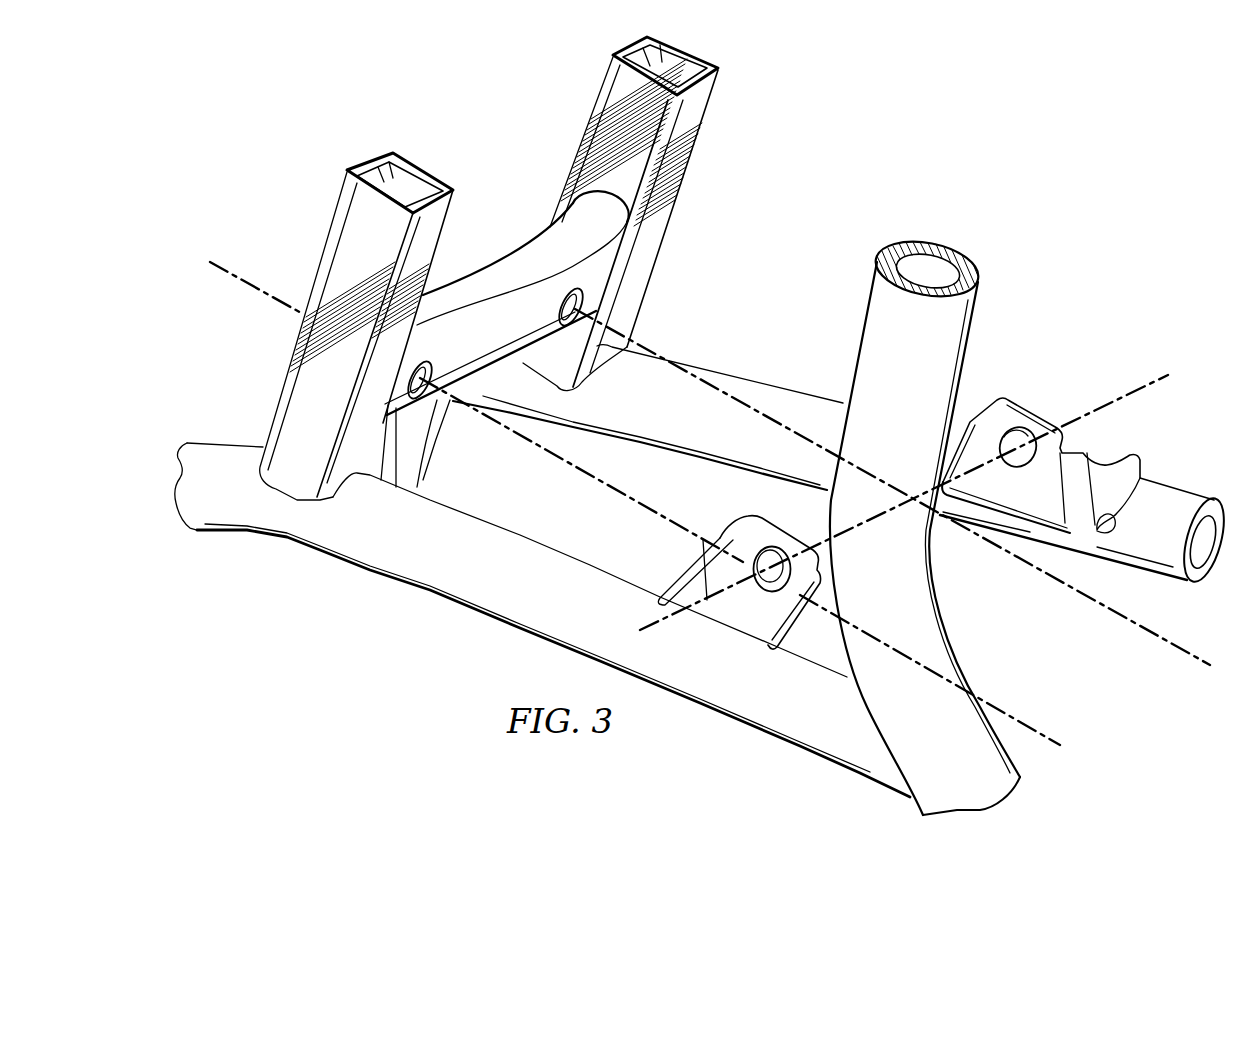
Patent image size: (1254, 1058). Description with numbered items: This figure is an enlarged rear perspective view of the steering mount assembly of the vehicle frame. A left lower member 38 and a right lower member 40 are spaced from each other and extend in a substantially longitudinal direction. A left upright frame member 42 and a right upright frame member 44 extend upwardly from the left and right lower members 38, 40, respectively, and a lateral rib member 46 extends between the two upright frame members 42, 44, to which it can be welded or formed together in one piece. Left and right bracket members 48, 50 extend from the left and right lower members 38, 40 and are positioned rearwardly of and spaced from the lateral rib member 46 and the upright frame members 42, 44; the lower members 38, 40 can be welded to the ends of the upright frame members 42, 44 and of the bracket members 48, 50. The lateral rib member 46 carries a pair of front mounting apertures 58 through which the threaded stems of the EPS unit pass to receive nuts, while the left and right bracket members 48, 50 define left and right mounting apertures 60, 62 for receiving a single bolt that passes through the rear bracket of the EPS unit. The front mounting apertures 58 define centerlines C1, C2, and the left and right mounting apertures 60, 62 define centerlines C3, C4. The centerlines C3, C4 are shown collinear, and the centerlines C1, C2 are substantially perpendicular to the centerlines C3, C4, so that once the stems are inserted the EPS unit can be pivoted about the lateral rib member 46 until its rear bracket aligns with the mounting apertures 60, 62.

The left lower member 38 is at (497, 534).
The right lower member 40 is at (797, 407).
The left upright frame member 42 is at (348, 267).
The right upright frame member 44 is at (625, 90).
The lateral rib member 46 is at (507, 277).
The left bracket member 48 is at (758, 606).
The right bracket member 50 is at (998, 408).
The mounting apertures 58 is at (585, 308).
The left mounting aperture 60 is at (768, 550).
The right mounting aperture 62 is at (1017, 435).
The centerline C1 is at (913, 500).
The centerline C2 is at (655, 512).
The centerline C3 is at (752, 578).
The centerline C4 is at (1050, 432).